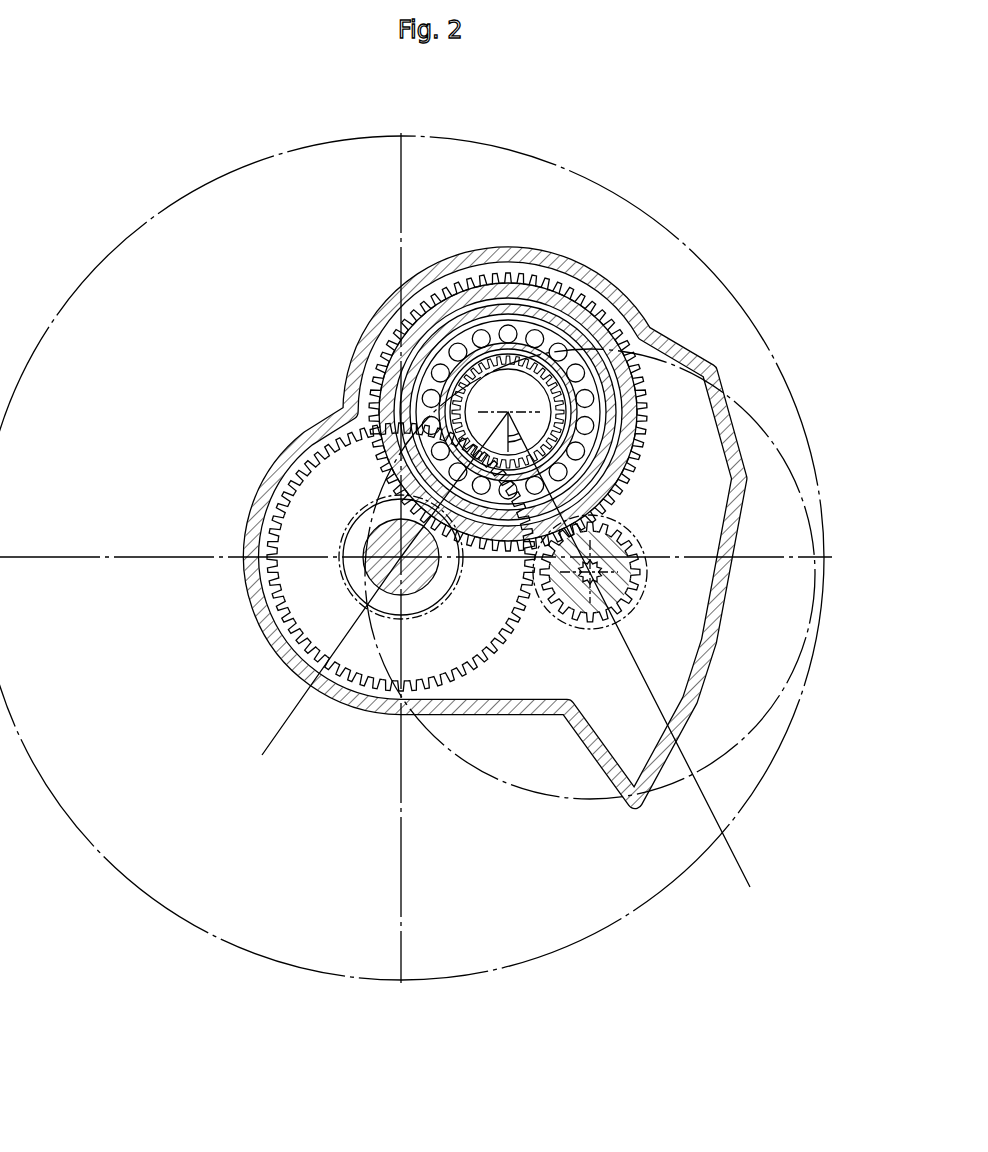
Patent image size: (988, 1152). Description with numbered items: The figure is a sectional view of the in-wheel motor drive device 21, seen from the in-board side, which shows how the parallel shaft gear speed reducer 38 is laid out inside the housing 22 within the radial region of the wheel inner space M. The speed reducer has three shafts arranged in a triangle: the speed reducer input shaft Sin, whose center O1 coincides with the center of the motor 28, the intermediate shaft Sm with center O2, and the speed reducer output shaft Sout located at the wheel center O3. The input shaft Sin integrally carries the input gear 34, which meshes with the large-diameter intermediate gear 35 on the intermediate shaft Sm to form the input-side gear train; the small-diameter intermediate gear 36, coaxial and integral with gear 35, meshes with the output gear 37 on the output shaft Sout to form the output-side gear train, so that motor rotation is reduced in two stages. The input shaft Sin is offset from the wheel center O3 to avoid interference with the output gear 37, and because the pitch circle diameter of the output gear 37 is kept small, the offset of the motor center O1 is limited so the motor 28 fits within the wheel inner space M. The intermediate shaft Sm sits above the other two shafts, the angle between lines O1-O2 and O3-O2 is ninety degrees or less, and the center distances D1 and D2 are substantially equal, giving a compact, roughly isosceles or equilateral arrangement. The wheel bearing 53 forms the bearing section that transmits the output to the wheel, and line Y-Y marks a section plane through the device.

The in-wheel motor drive device 21 is at (562, 326).
The housing 22 is at (565, 380).
The motor 28 is at (750, 730).
The input gear 34 is at (707, 532).
The large-diameter intermediate gear 35 is at (565, 411).
The small-diameter intermediate gear 36 is at (412, 360).
The output gear 37 is at (372, 561).
The parallel shaft gear speed reducer 38 is at (372, 306).
The wheel bearing 53 is at (237, 605).
The wheel inner space M is at (672, 226).
The intermediate shaft Sm is at (529, 392).
The speed reducer input shaft Sin is at (612, 579).
The speed reducer output shaft Sout is at (396, 591).
The center of the motor O1 is at (590, 572).
The center of the intermediate shaft O2 is at (508, 412).
The wheel center O3 is at (400, 557).
The center distance between the speed reducer input shaft and the intermediate shaft D1 is at (505, 545).
The center distance between the speed reducer output shaft and the intermediate shaf D2 is at (470, 533).
The section line Y- Y is at (283, 742).